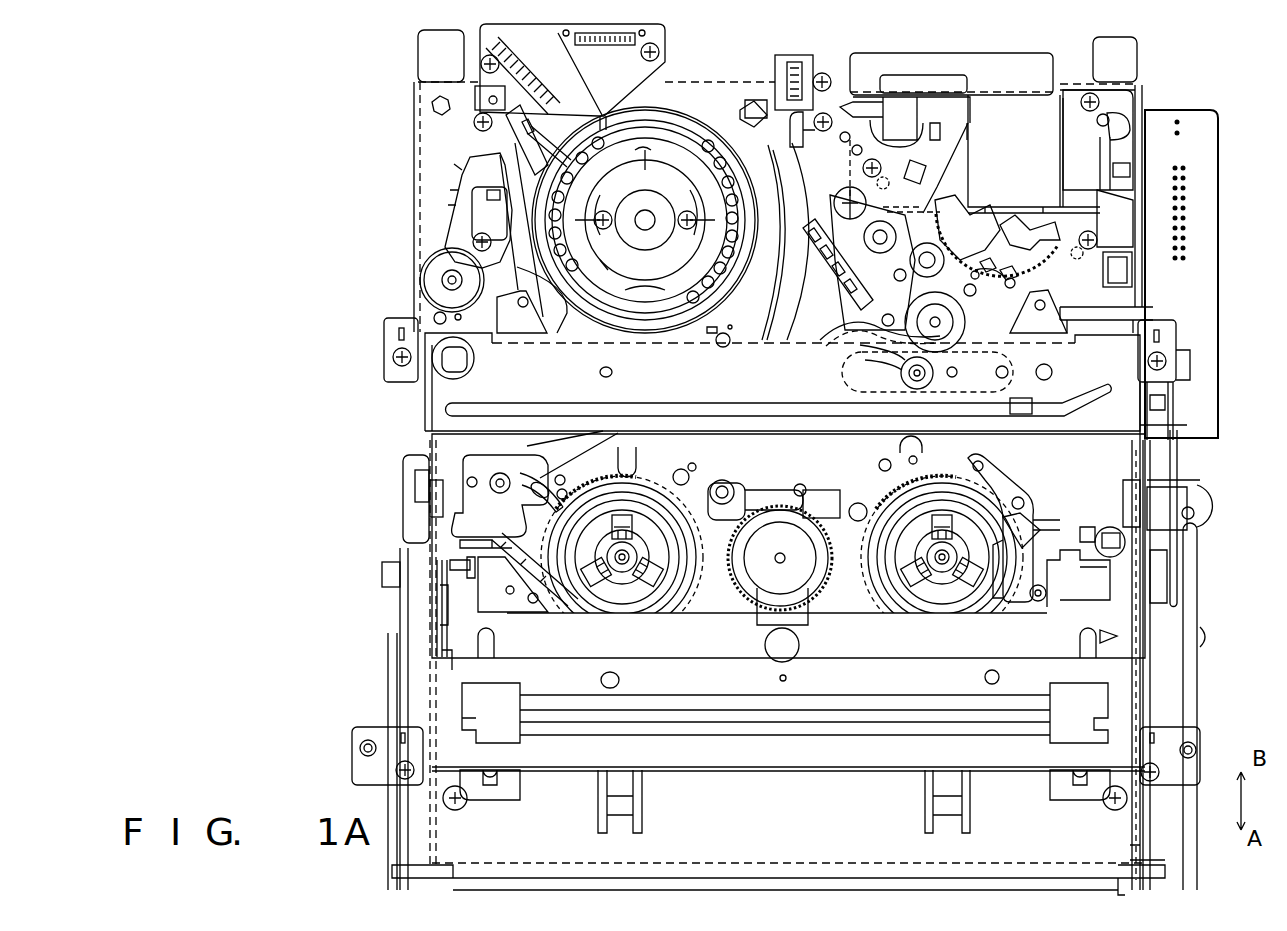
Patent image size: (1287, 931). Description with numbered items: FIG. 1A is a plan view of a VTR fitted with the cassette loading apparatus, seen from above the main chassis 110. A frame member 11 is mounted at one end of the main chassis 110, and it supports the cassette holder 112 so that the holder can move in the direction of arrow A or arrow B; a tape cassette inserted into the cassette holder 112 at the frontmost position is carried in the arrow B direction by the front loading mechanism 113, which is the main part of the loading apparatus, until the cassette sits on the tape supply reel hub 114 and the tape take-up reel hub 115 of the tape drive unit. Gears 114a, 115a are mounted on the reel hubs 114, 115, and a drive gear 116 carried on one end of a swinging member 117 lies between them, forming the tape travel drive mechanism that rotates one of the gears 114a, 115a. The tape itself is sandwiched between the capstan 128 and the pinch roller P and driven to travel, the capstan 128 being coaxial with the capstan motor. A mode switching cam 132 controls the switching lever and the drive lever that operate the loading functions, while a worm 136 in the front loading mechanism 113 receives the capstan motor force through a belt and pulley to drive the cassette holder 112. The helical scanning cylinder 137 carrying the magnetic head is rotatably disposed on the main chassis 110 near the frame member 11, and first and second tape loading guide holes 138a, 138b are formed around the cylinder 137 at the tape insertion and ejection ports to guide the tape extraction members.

The main chassis 11 is at (1120, 352).
The main chassis 110 is at (1201, 292).
The cassette holder 112 is at (457, 613).
The front loading mechanism 113 is at (1213, 597).
The tape supply reel hub 114 is at (628, 580).
The gear 114a is at (588, 485).
The tape take-up reel hub 115 is at (945, 580).
The gear 115a is at (880, 505).
The drive gear 116 is at (762, 517).
The swinging member 117 is at (797, 600).
The capstan 128 is at (905, 380).
The mode switching cam 132 is at (940, 187).
The worm 136 is at (1217, 522).
The helical scanning cylinder 137 is at (668, 130).
The first tape loading guide hole 138a is at (501, 358).
The second tape loading guide hole 138b is at (886, 372).
The pinch roller P is at (977, 225).